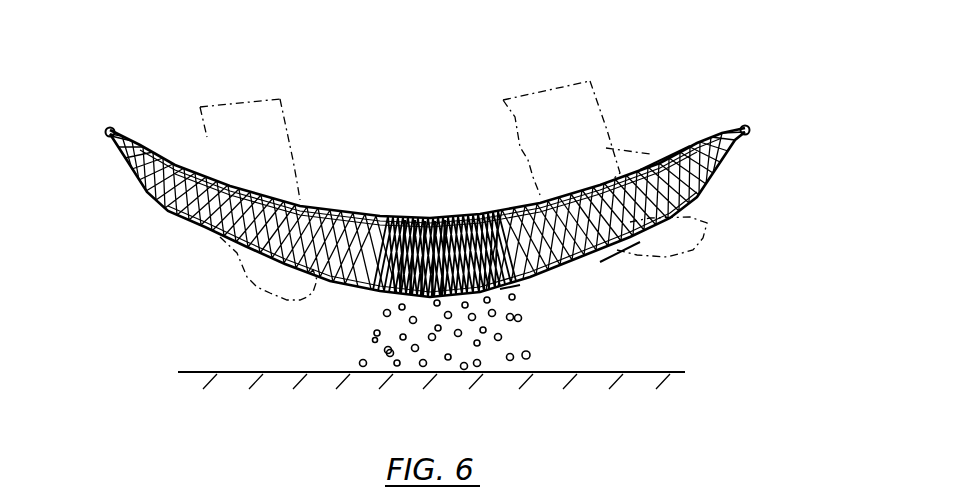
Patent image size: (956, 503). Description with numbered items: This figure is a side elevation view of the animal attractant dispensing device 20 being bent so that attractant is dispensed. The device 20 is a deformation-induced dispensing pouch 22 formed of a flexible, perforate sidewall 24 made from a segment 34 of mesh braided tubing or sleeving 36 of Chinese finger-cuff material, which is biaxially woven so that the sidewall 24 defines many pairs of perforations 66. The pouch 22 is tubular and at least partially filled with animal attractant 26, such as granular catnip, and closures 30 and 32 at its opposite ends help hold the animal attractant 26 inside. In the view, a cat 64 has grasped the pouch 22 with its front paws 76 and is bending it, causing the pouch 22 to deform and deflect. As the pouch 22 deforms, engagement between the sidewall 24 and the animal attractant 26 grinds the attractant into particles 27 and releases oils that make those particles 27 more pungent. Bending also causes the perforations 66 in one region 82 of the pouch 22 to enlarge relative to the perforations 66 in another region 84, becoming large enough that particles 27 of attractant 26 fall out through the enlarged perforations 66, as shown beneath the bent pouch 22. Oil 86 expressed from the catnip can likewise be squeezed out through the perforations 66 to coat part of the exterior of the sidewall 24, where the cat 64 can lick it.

The animal attractant dispensing device 20 is at (716, 125).
The pouch 22 is at (134, 184).
The sidewall 24 is at (338, 205).
The animal attractant 26 is at (372, 339).
The particles 27 is at (522, 318).
The closure 30 is at (752, 128).
The closure 32 is at (113, 126).
The segment 34 is at (657, 148).
The mesh braided tubing or sleeving 36 is at (620, 256).
The cat 64 is at (238, 103).
The perforations 66 is at (399, 215).
The front paws 76 is at (314, 162).
The region 82 is at (440, 322).
The region 84 is at (426, 205).
The oil 86 is at (510, 290).